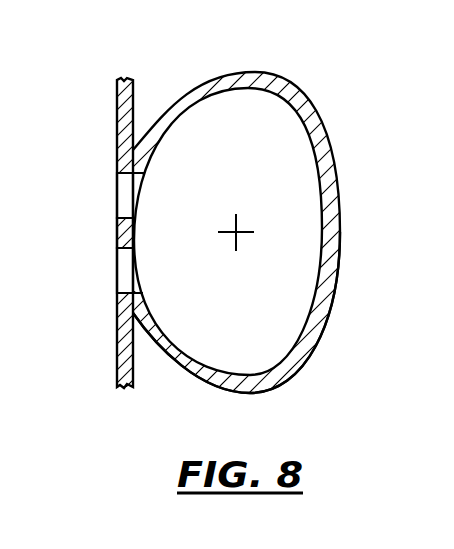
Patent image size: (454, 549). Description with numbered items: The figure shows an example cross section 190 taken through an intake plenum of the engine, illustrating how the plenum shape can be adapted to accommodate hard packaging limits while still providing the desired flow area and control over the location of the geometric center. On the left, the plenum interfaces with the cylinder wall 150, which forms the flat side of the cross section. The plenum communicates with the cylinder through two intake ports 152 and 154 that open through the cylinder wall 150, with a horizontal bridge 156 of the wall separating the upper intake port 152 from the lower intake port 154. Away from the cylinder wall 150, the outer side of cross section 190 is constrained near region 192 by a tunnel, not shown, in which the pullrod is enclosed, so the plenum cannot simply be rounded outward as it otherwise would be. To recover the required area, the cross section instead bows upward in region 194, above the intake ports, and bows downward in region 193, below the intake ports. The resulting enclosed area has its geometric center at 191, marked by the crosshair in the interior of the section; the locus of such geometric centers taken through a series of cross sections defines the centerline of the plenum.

The cylinder wall 150 is at (133, 108).
The intake port 152 is at (127, 198).
The intake port 154 is at (127, 270).
The horizontal bridge 156 is at (117, 230).
The cross section 190 is at (309, 70).
The geometric center 191 is at (238, 222).
The constrained region 192 is at (338, 277).
The downward bow 193 is at (273, 347).
The upward bow 194 is at (270, 120).